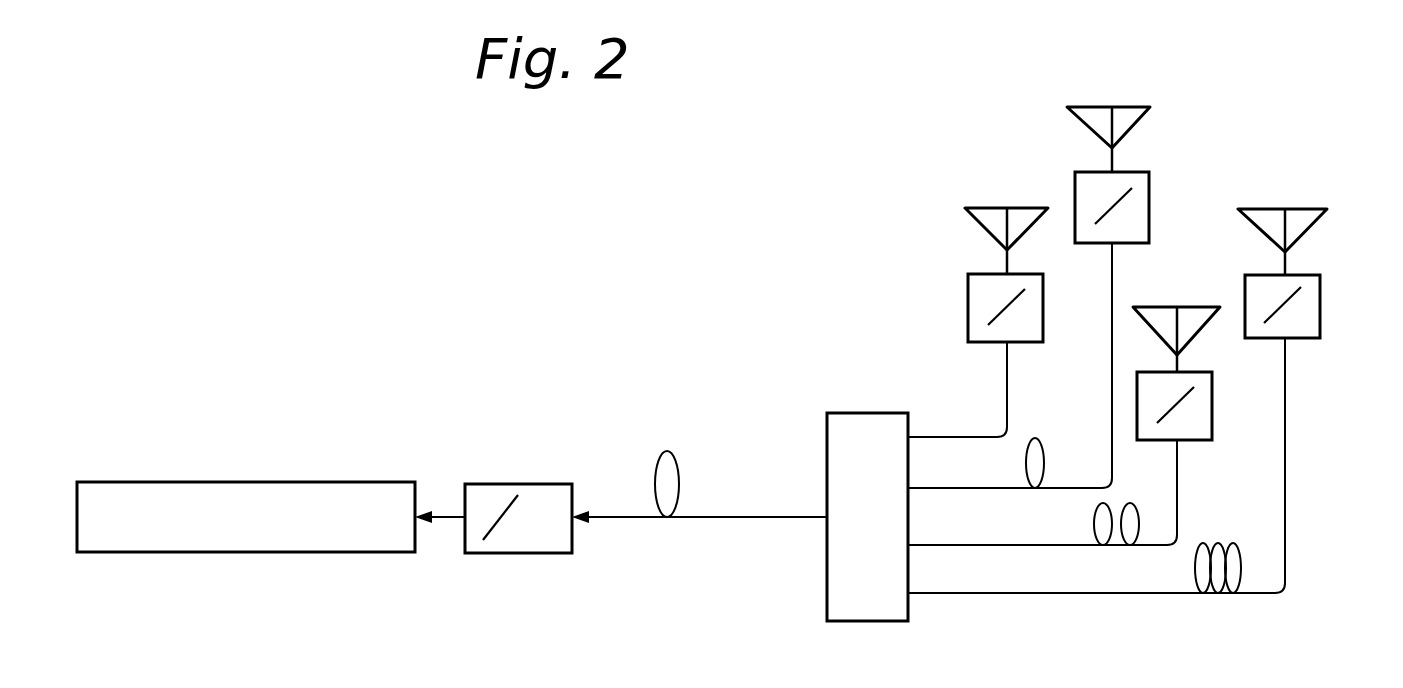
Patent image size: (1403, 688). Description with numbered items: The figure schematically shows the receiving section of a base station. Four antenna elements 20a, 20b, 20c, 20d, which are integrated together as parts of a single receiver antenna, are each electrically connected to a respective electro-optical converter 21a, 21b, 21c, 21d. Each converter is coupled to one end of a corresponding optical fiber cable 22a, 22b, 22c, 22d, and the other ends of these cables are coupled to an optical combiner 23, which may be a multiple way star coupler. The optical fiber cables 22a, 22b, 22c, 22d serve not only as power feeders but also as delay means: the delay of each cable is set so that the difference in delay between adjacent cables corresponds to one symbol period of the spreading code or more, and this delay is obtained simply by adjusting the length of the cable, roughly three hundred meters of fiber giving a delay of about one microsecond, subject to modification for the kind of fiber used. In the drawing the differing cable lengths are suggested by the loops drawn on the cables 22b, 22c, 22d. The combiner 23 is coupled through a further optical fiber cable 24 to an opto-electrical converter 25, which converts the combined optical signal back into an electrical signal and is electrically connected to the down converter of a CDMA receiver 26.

The antenna element 20a is at (990, 208).
The antenna element 20b is at (1097, 107).
The antenna element 20c is at (1160, 307).
The antenna element 20d is at (1272, 209).
The electro-optical converter 21a is at (968, 303).
The electro-optical converter 21b is at (1149, 232).
The electro-optical converter 21c is at (1195, 440).
The electro-optical converter 21d is at (1320, 305).
The optical fiber cable 22a is at (1007, 372).
The optical fiber cable 22b is at (1112, 422).
The optical fiber cable 22c is at (1177, 515).
The optical fiber cable 22d is at (1285, 506).
The optical combiner 23 is at (866, 413).
The optical fiber cable 24 is at (679, 472).
The opto-electrical converter 25 is at (527, 484).
The CDMA receiver 26 is at (248, 482).